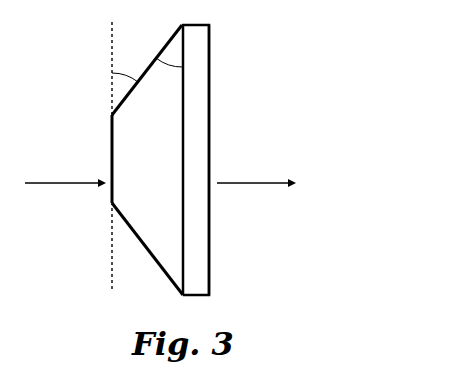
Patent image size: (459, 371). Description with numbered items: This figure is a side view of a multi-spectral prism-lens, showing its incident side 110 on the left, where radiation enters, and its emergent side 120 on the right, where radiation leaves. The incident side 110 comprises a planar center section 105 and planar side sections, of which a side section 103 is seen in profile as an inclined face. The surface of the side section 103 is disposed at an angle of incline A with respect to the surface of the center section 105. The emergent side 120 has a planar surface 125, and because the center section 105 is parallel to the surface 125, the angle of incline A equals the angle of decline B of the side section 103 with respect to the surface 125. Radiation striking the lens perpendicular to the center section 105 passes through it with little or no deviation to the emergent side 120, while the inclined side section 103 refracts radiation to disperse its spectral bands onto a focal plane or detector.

The side section 103 is at (167, 93).
The center section 105 is at (110, 122).
The planar surface 125 is at (209, 242).
The incident side 110 is at (65, 154).
The emergent side 120 is at (259, 152).